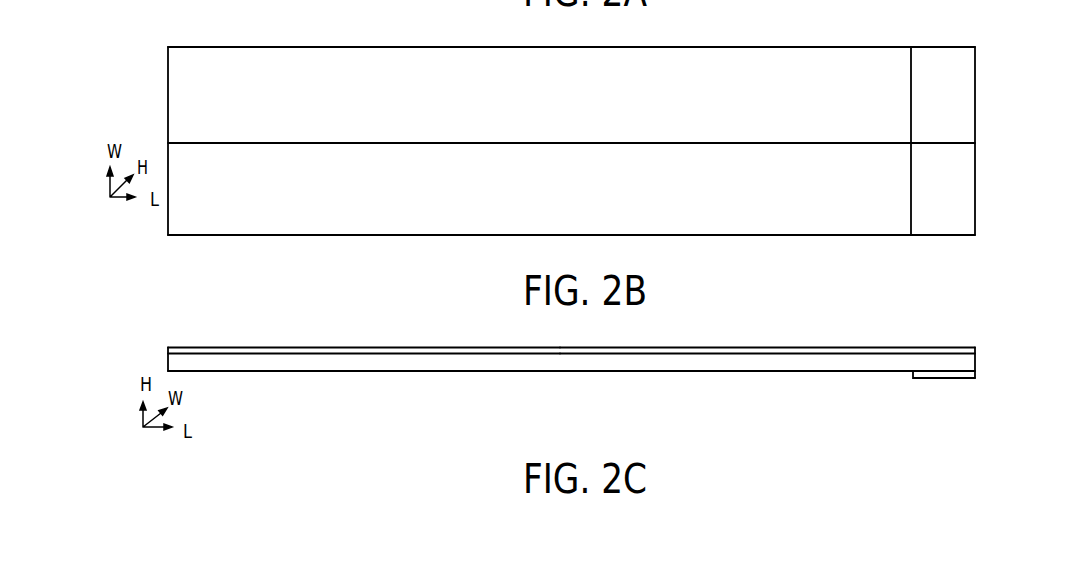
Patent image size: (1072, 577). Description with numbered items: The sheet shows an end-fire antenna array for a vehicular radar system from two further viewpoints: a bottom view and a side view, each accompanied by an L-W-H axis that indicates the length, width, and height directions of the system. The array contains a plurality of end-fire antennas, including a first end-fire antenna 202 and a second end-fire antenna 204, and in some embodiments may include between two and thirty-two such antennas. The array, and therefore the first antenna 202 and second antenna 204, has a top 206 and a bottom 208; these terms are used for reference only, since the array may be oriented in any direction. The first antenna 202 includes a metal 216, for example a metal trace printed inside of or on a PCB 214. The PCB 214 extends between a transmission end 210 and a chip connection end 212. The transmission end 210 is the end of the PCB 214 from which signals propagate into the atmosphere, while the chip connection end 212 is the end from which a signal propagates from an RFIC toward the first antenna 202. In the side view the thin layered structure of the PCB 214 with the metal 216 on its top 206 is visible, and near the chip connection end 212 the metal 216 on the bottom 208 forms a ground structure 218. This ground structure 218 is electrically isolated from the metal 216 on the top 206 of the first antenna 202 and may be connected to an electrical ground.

In FIG. 2B, the first end-fire antenna 202 is at (976, 178).
In FIG. 2C, the first end-fire antenna 202 is at (712, 363).
In FIG. 2B, the second end-fire antenna 204 is at (976, 75).
In FIG. 2C, the top 206 is at (283, 346).
In FIG. 2B, the bottom 208 is at (283, 65).
In FIG. 2C, the bottom 208 is at (360, 373).
In FIG. 2B, the transmission end 210 is at (168, 93).
In FIG. 2C, the transmission end 210 is at (178, 360).
In FIG. 2B, the chip connection end 212 is at (976, 108).
In FIG. 2C, the chip connection end 212 is at (968, 365).
In FIG. 2C, the PCB 214 is at (875, 363).
In FIG. 2C, the metal 216 is at (860, 346).
In FIG. 2B, the ground structure 218 is at (965, 212).
In FIG. 2C, the ground structure 218 is at (952, 375).